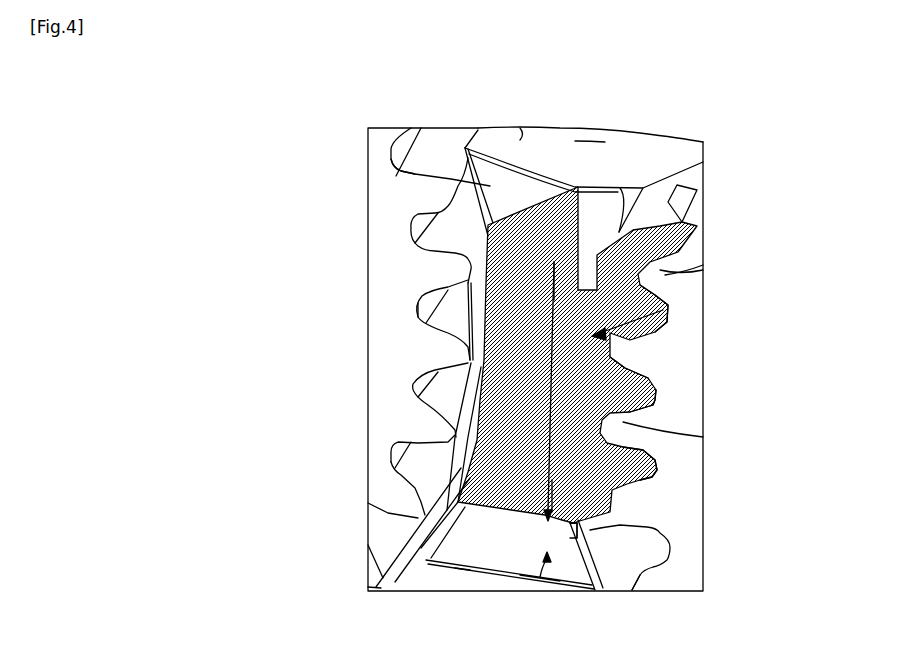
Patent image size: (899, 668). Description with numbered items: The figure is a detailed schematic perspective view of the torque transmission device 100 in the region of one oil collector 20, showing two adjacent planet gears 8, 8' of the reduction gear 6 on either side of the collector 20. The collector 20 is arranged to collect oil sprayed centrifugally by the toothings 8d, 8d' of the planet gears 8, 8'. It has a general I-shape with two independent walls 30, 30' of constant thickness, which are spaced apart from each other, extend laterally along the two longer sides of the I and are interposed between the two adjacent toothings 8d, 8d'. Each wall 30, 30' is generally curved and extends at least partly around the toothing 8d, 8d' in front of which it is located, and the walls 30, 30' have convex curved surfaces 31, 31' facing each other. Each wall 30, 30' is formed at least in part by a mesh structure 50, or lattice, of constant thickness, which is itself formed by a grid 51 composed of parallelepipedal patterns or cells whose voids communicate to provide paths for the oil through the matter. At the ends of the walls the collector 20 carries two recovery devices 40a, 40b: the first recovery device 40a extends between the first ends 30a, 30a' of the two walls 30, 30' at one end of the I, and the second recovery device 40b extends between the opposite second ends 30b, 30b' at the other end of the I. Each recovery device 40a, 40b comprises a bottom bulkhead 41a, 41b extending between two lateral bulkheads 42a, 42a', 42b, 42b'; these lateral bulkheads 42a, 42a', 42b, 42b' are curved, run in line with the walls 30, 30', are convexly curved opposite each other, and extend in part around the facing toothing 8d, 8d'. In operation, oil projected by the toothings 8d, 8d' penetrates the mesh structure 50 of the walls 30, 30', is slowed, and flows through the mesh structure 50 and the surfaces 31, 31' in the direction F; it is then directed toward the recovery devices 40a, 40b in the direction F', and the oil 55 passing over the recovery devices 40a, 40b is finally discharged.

The prosthetic assembly 100 is at (180, 86).
The reduction gear 6 is at (310, 76).
The planet gear 8 is at (373, 324).
The toothing 8d is at (343, 340).
The planet gear 8' is at (691, 369).
The toothing 8d' is at (739, 285).
The oil collector 20 is at (502, 120).
The wall 30 is at (370, 335).
The first end of wall 30a is at (367, 220).
The second end of wall 30b is at (336, 509).
The wall 30' is at (716, 319).
The first end of wall 30a' is at (756, 227).
The second end of wall 30b' is at (693, 554).
The convex curved surface 31 is at (323, 475).
The convex curved surface 31' is at (682, 475).
The first recovery device 40a is at (585, 143).
The second recovery device 40b is at (540, 570).
The bottom bulkhead 41a is at (522, 138).
The bottom bulkhead 41b is at (465, 567).
The lateral bulkhead 42a is at (349, 155).
The lateral bulkhead 42b is at (338, 531).
The lateral bulkhead 42a' is at (726, 189).
The lateral bulkhead 42b' is at (715, 573).
The mesh structure 50 is at (517, 401).
The grid 51 is at (655, 398).
The oil 55 is at (570, 577).
The direction F is at (669, 353).
The direction F' is at (435, 482).